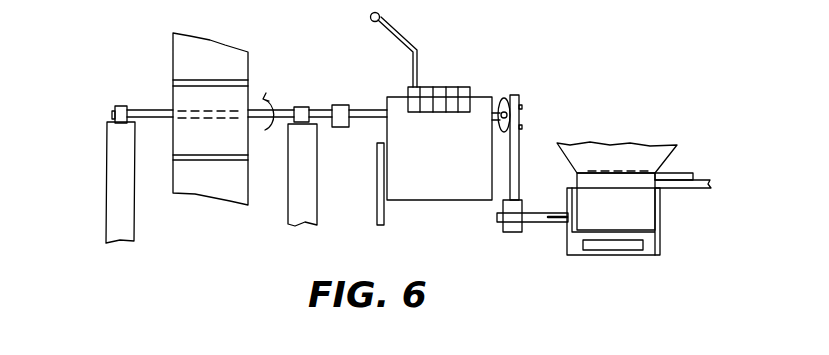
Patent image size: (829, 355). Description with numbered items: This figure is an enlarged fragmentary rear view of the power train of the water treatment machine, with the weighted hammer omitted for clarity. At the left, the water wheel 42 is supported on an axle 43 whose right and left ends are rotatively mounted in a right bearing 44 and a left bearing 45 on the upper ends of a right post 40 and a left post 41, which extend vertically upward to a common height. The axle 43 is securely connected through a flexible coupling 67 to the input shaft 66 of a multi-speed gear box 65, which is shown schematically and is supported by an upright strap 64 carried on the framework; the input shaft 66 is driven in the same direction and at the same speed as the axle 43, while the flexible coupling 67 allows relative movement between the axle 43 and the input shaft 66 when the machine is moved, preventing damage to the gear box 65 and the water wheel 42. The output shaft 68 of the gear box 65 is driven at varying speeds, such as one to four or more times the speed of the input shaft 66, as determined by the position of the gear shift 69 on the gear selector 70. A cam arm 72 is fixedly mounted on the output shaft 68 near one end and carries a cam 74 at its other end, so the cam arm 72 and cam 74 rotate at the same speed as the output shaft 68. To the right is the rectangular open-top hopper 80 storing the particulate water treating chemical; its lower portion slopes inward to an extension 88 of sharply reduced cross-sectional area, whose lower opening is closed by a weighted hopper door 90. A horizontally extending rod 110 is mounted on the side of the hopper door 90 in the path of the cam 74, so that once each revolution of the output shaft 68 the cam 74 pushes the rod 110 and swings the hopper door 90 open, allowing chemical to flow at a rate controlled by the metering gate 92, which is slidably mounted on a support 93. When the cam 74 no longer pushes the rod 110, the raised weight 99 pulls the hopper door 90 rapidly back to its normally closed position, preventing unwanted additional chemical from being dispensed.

The right post 40 is at (115, 163).
The left post 41 is at (307, 188).
The water wheel 42 is at (220, 60).
The axle 43 is at (153, 110).
The right bearing 44 is at (120, 105).
The left bearing 45 is at (300, 107).
The upright strap 64 is at (383, 210).
The multi-speed gear box 65 is at (450, 166).
The input shaft 66 is at (370, 112).
The flexible coupling 67 is at (340, 105).
The output shaft 68 is at (494, 112).
The gear shift 69 is at (410, 46).
The gear selector 70 is at (450, 85).
The cam arm 72 is at (520, 147).
The cam 74 is at (522, 205).
The hopper 80 is at (624, 150).
The extension 88 is at (626, 211).
The hopper door 90 is at (660, 245).
The metering gate 92 is at (679, 170).
The support 93 is at (700, 186).
The weight 99 is at (628, 250).
The rod 110 is at (532, 222).